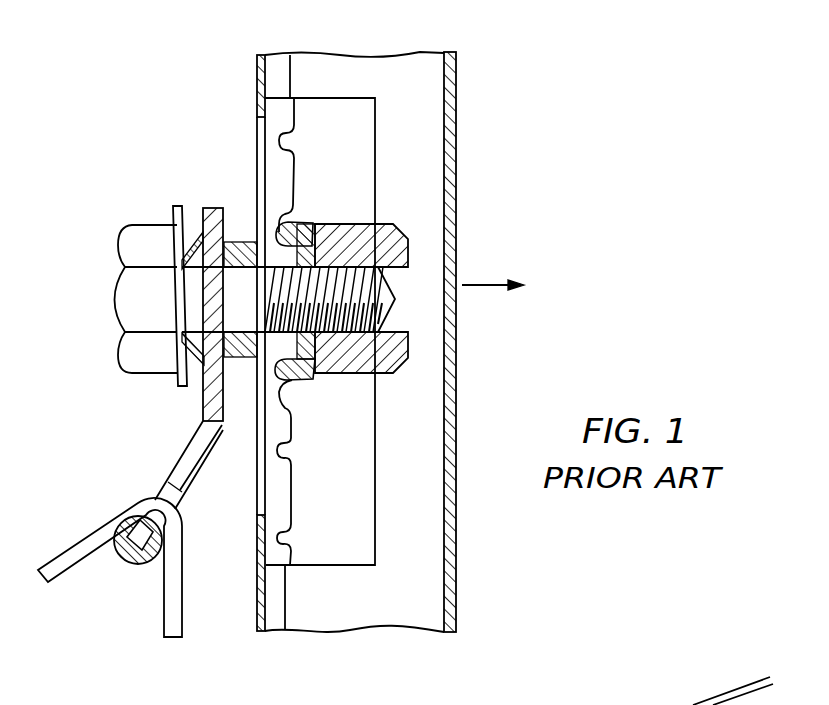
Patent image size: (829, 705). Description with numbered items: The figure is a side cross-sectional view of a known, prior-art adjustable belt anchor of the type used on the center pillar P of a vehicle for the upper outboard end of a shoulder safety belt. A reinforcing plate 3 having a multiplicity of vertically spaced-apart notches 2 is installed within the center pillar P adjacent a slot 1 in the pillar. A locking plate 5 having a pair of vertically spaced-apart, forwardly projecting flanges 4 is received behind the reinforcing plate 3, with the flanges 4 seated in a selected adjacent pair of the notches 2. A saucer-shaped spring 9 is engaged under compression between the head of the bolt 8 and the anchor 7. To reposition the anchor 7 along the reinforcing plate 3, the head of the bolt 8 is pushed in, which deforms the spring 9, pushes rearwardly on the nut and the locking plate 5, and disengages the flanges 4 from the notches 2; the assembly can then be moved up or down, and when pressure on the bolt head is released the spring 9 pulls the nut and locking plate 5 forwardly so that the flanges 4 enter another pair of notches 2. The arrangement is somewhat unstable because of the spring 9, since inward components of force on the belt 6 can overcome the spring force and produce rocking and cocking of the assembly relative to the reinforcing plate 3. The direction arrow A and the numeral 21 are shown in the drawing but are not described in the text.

The center pillar P is at (457, 70).
The slot 1 is at (258, 118).
The notches 2 is at (297, 142).
The reinforcing plate 3 is at (362, 131).
The flanges 4 is at (284, 236).
The locking plate 5 is at (319, 231).
The belt 6 is at (178, 618).
The anchor 7 is at (170, 484).
The bolt 8 is at (128, 298).
The saucer-shaped spring 9 is at (178, 390).
The direction arrow A is at (482, 285).
The member of adjacent figure 21 is at (631, 704).